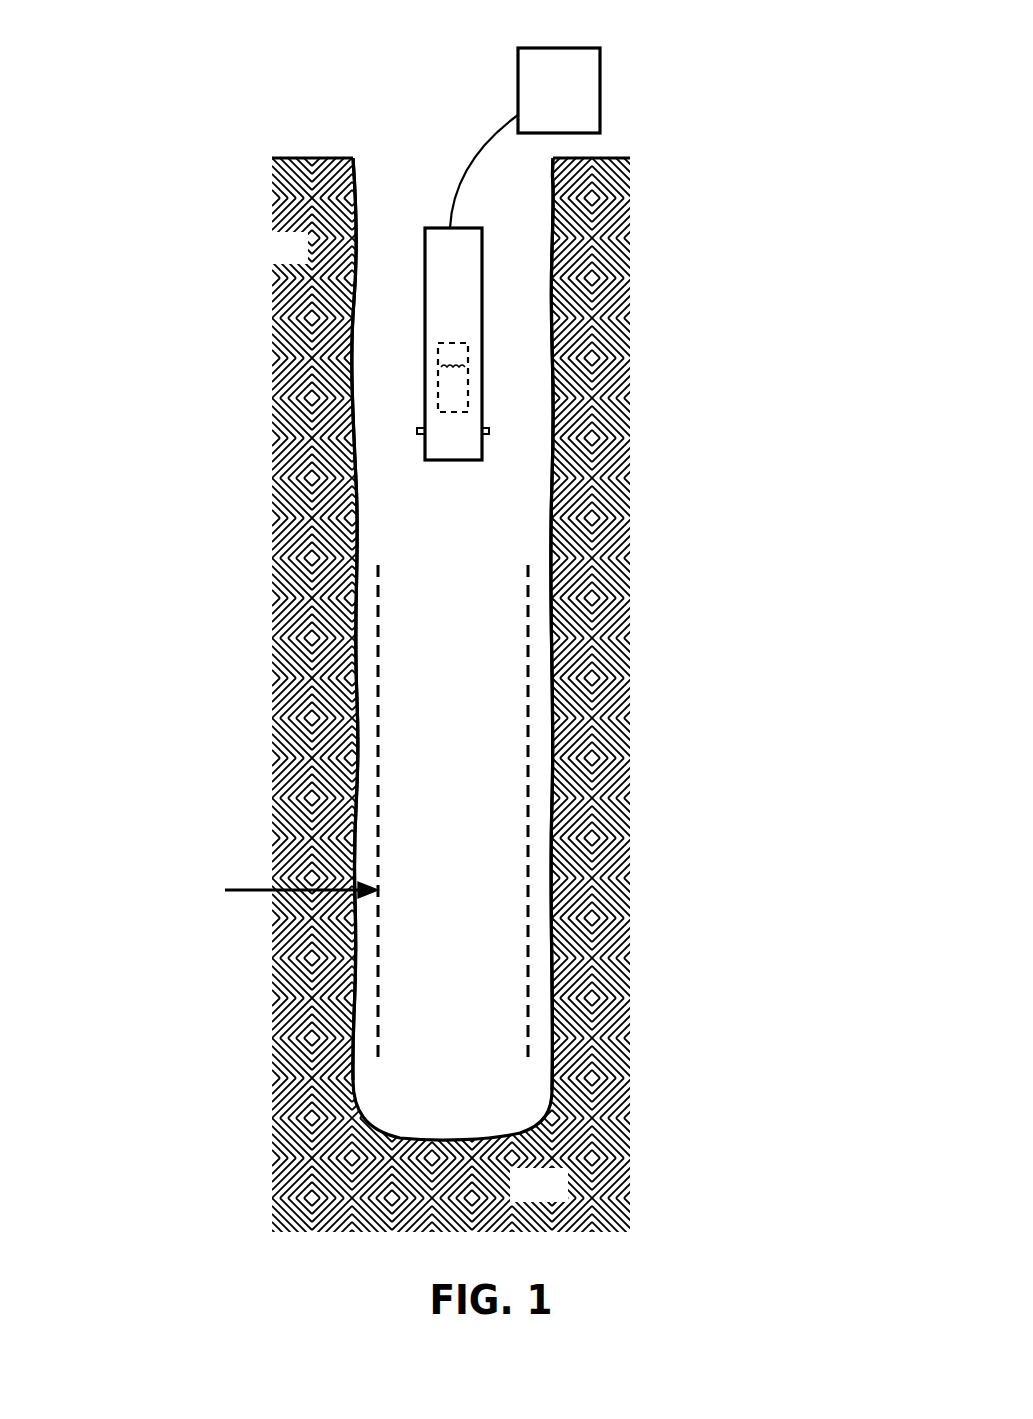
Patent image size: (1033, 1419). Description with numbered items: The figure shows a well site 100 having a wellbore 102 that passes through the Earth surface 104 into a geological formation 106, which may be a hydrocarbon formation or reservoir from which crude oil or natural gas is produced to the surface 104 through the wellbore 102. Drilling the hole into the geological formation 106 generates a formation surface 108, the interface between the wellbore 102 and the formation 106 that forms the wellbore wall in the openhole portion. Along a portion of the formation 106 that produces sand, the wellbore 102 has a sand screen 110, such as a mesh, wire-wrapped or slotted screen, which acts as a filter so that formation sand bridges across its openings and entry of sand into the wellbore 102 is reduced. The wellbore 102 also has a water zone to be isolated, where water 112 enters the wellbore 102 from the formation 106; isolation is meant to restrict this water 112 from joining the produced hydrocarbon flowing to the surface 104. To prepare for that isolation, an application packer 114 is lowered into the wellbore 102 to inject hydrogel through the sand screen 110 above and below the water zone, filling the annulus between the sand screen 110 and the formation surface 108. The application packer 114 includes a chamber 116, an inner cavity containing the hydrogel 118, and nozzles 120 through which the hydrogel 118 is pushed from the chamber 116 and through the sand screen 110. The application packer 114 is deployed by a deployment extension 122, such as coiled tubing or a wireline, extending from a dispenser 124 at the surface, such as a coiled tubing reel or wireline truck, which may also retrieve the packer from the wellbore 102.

The well site 100 is at (686, 80).
The wellbore 102 is at (492, 600).
The Earth surface 104 is at (298, 158).
The geological formation 106 is at (304, 260).
The formation surface 108 is at (365, 437).
The sand screen 110 is at (378, 665).
The water 112 is at (250, 890).
The application packer 114 is at (482, 293).
The chamber 116 is at (470, 363).
The hydrogel 118 is at (455, 397).
The nozzles 120 is at (488, 430).
The deployment extension 122 is at (452, 182).
The dispenser 124 is at (535, 105).